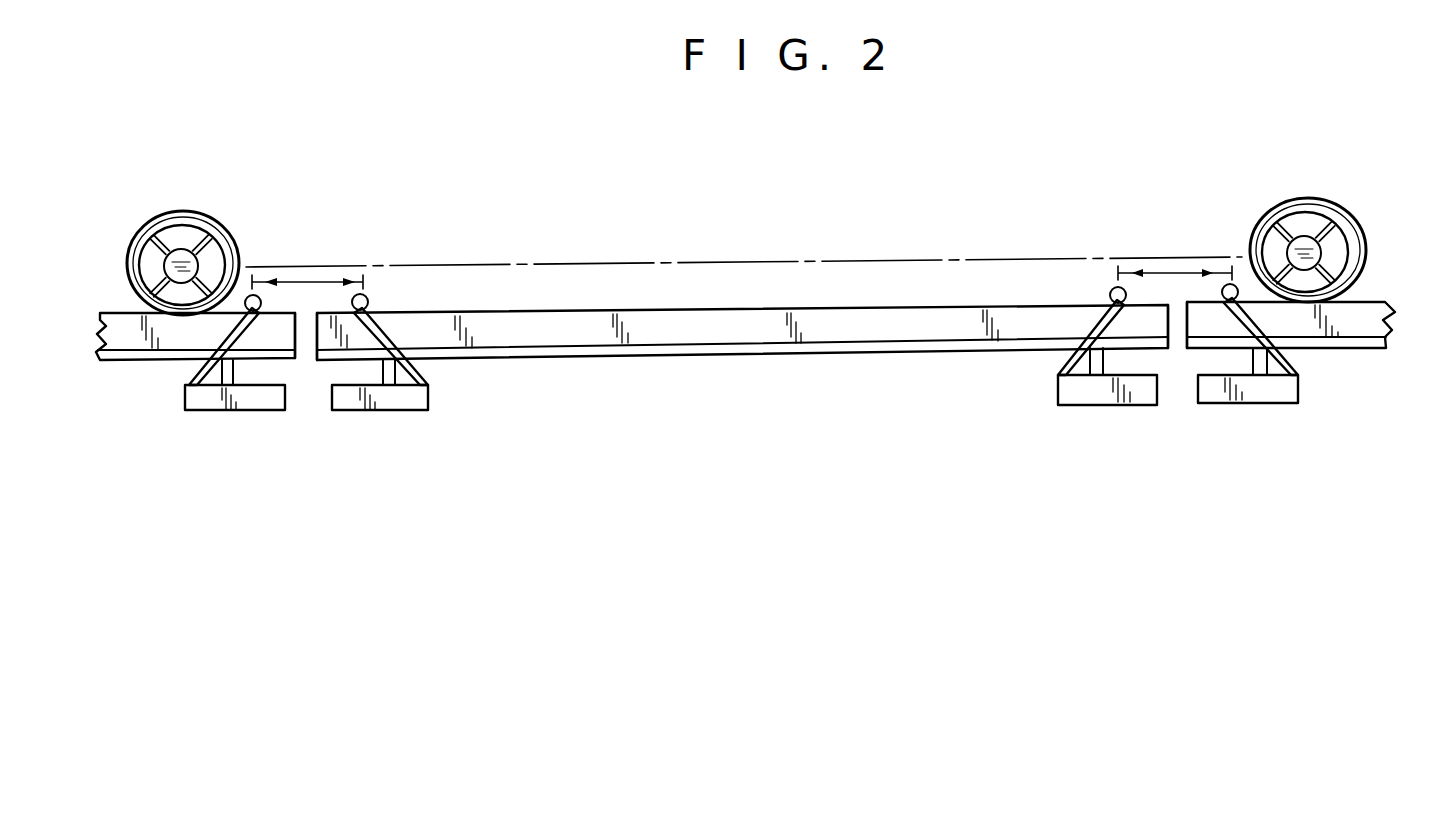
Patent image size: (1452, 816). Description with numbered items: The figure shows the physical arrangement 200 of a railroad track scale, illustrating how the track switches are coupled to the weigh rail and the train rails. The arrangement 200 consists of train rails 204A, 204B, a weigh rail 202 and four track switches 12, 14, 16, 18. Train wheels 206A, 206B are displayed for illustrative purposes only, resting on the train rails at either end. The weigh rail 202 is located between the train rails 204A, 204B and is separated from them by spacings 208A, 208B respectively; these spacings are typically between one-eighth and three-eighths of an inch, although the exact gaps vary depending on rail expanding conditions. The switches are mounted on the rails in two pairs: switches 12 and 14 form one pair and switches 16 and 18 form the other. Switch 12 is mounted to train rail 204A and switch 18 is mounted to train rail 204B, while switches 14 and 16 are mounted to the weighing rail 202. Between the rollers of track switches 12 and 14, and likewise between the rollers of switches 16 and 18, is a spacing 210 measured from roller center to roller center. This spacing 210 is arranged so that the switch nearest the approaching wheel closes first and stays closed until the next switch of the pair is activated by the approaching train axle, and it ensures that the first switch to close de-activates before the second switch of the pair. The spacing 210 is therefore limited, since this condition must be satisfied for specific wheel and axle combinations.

The arrangement 200 is at (892, 262).
The weigh rail 202 is at (663, 313).
The train rail 204A is at (123, 340).
The train rail 204B is at (1365, 320).
The train wheel 206A is at (208, 213).
The train wheel 206B is at (1353, 143).
The spacing 208A is at (303, 330).
The spacing 208B is at (1177, 320).
The spacing 210 is at (307, 225).
The track switch 12 is at (217, 402).
The track switch 14 is at (395, 400).
The track switch 16 is at (1097, 387).
The track switch 18 is at (1270, 385).